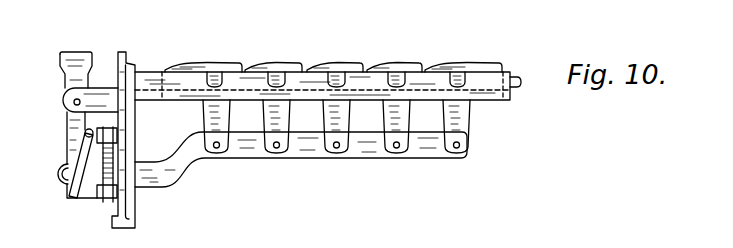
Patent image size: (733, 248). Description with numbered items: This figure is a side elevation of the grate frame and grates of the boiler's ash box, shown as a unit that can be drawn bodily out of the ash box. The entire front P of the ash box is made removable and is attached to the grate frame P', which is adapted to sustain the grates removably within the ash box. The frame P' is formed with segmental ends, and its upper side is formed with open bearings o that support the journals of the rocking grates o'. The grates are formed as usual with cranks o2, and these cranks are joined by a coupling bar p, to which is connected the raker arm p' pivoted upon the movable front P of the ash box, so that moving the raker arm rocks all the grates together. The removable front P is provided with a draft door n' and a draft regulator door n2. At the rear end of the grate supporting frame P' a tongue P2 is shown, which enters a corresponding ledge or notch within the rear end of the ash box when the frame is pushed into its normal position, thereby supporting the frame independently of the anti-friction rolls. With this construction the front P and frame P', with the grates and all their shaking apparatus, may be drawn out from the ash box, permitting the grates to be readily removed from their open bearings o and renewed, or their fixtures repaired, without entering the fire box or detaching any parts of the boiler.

The front of the ash box P is at (123, 124).
The grate frame P' is at (329, 68).
The tongue P2 is at (518, 83).
The rocking grates o' is at (333, 53).
The bearings o is at (347, 81).
The cranks o2 is at (472, 120).
The coupling bar p is at (301, 160).
The raker arm p' is at (77, 125).
The draft door n' is at (93, 178).
The draft regulator door n2 is at (72, 192).